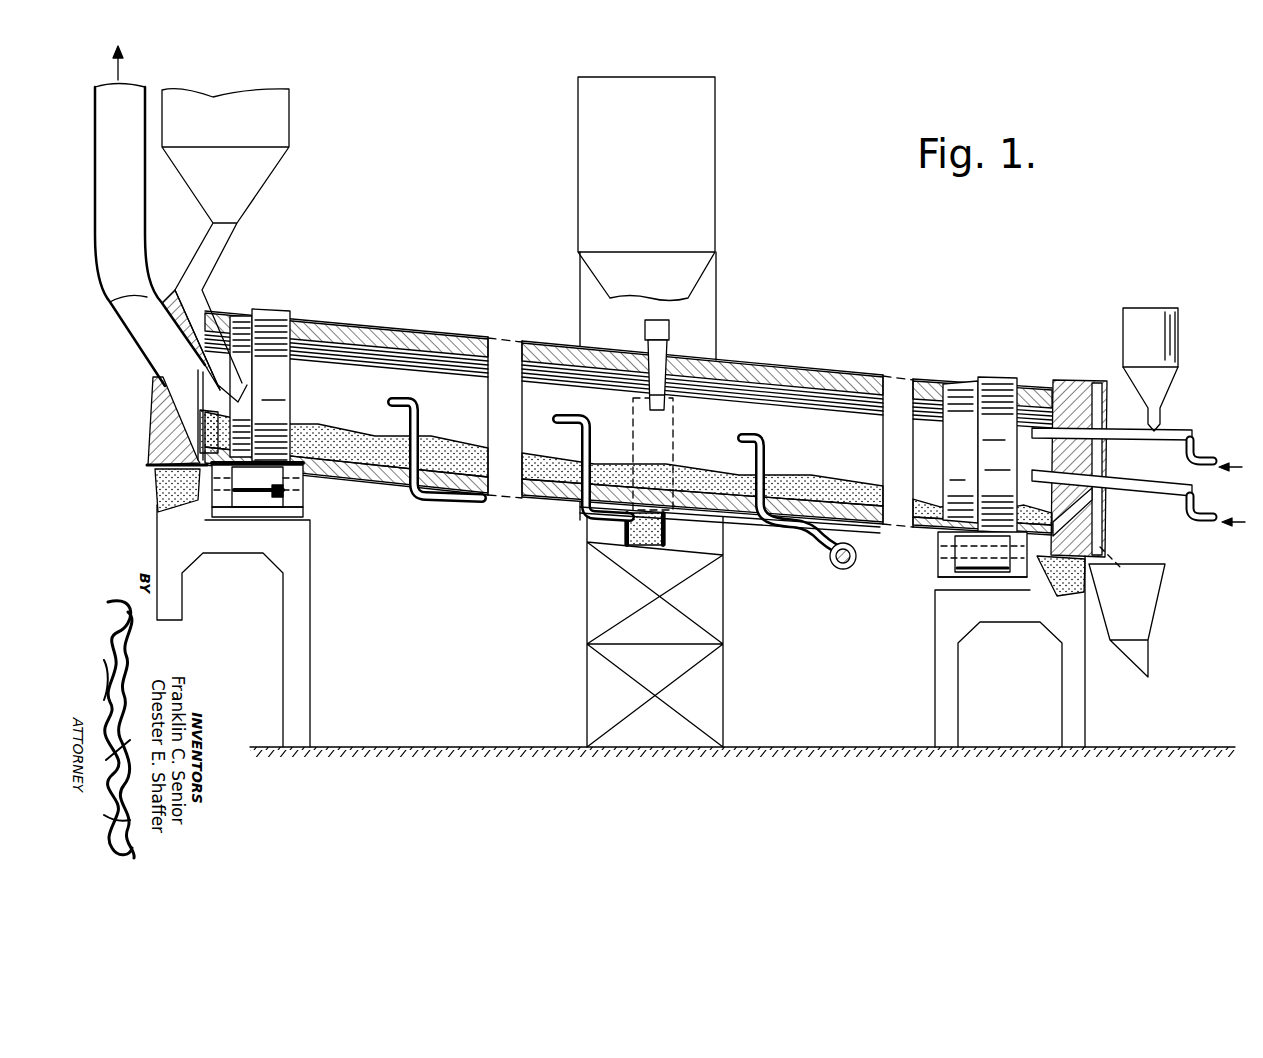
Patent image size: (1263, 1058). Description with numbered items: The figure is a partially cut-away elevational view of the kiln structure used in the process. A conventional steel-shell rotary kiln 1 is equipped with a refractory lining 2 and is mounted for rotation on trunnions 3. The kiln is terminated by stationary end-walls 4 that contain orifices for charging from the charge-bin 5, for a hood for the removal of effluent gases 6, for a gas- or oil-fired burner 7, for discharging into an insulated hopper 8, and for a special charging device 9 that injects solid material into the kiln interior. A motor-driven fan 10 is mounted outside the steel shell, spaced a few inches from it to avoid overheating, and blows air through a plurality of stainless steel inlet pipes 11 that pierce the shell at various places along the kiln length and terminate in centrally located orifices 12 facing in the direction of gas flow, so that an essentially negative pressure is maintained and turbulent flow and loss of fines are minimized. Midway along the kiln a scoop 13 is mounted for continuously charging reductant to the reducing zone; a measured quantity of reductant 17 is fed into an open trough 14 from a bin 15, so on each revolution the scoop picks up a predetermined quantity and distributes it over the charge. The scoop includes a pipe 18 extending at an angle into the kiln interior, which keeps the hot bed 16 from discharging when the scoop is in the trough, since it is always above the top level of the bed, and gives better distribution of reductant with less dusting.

The rotary kiln 1 is at (397, 324).
The refractory lining 2 is at (443, 334).
The trunnions 3 is at (273, 303).
The stationary end-walls 4 is at (152, 433).
The charge-bin 5 is at (267, 183).
The hood for the removal of effluent gases 6 is at (133, 348).
The gas- or oil-fired burner 7 is at (1137, 493).
The insulated hopper 8 is at (1158, 603).
The special charging device 9 is at (1173, 428).
The motor-driven fan 10 is at (837, 569).
The stainless steel inlet pipes 11 is at (745, 525).
The orifices 12 is at (400, 402).
The scoop 13 is at (647, 326).
The open trough 14 is at (627, 522).
The bin 15 is at (578, 172).
The hot bed 16 is at (460, 438).
The reductant 17 is at (670, 537).
The pipe 18 is at (643, 388).